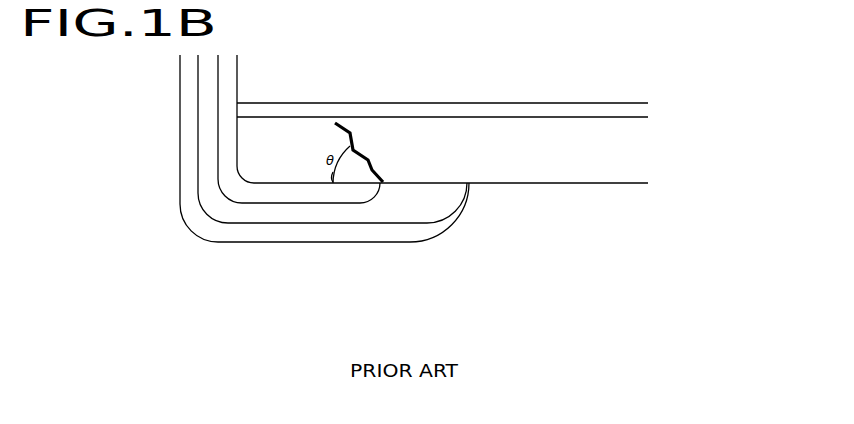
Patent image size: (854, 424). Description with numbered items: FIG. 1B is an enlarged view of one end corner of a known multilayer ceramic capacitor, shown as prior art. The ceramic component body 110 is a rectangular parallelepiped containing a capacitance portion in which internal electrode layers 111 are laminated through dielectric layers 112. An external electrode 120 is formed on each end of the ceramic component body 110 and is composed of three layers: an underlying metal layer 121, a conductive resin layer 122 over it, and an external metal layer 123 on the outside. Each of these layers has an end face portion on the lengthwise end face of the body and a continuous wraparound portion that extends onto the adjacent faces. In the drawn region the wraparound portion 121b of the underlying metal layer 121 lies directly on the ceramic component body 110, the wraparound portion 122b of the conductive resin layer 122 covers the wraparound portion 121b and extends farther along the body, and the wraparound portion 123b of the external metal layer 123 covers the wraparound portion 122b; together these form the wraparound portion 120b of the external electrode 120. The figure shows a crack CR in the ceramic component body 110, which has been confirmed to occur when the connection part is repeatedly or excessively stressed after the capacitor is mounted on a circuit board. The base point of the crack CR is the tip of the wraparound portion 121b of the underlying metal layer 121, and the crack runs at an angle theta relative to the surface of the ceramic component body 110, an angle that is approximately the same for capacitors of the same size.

The ceramic component body 110 is at (545, 186).
The internal electrode layers 111 is at (590, 118).
The dielectric layers 112 is at (625, 86).
The external electrode 120 is at (259, 179).
The wraparound portion 120b is at (232, 243).
The underlying metal layer 121 is at (258, 179).
The wraparound portion 121b is at (287, 210).
The conductive resin layer 122 is at (215, 179).
The wraparound portion 122b is at (337, 213).
The external metal layer 123 is at (227, 179).
The wraparound portion 123b is at (383, 237).
The crack CR is at (373, 158).